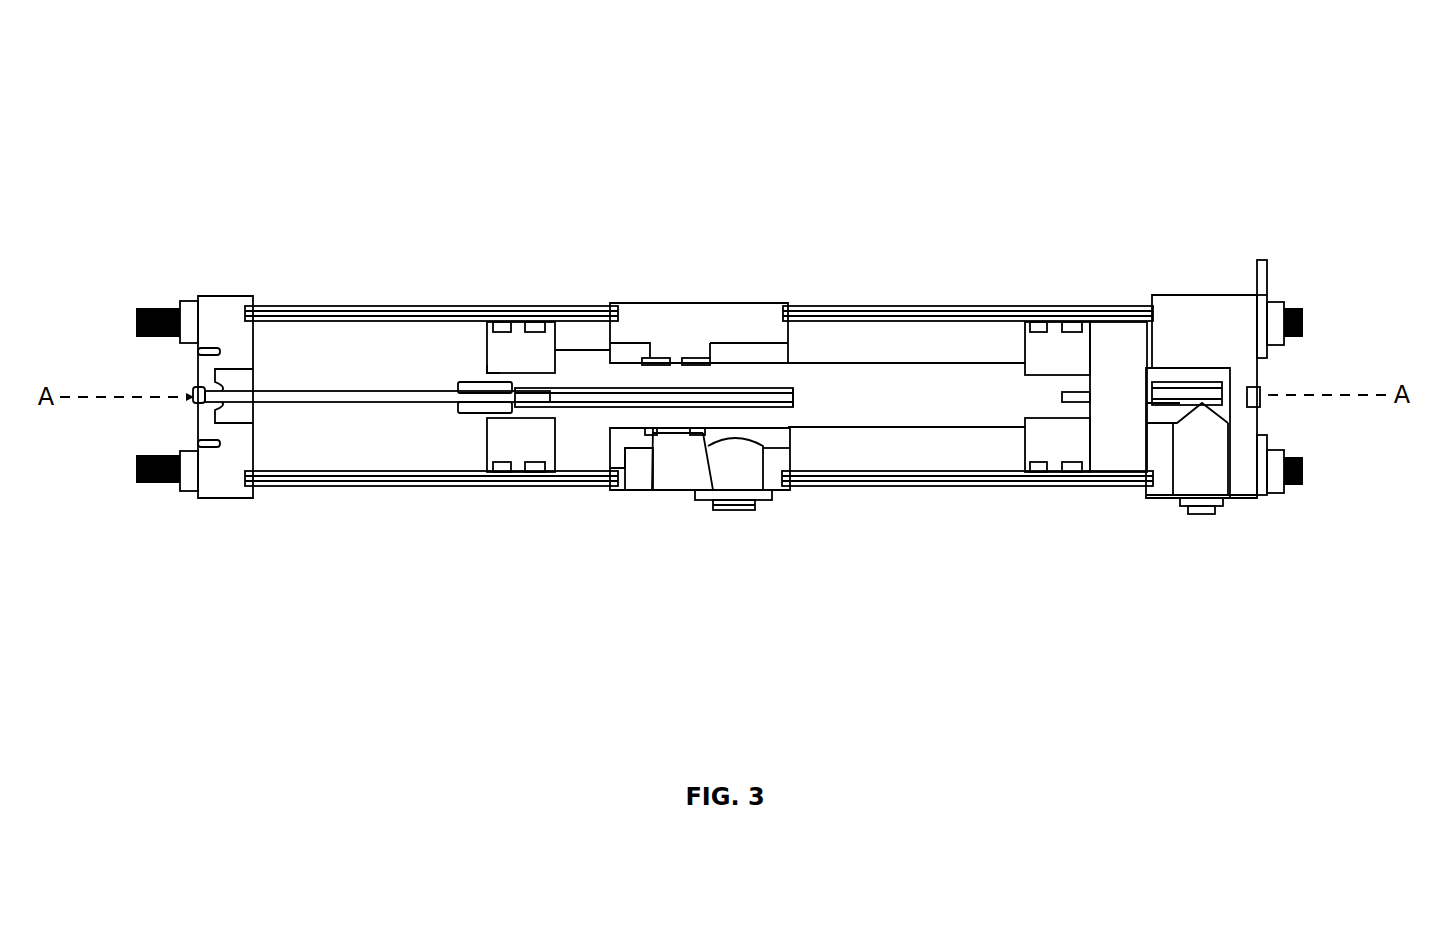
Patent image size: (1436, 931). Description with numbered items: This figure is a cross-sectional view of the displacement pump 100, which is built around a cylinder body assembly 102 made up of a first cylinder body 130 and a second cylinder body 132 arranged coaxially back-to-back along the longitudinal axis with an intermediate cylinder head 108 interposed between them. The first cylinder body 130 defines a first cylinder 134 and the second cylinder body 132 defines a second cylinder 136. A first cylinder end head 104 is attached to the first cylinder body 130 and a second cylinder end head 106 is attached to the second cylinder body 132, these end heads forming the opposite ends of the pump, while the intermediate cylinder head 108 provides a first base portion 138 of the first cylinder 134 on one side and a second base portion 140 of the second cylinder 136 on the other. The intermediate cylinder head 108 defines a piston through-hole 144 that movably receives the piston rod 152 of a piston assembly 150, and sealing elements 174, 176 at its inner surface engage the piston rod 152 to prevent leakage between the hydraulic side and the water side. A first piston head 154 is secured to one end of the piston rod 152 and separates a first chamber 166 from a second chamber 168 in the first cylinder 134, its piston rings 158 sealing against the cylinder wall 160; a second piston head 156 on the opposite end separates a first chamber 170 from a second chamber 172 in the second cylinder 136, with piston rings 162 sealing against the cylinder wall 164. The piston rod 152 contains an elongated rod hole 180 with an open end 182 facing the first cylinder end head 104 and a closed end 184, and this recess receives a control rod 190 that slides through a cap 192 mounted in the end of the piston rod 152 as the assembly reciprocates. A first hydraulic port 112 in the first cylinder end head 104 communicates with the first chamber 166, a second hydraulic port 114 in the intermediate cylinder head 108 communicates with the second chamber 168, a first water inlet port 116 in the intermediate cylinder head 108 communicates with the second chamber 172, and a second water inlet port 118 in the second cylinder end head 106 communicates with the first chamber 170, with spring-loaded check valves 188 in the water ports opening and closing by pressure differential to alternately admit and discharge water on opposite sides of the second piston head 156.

The displacement pump 100 is at (178, 112).
The cylinder body assembly 102 is at (373, 220).
The first cylinder end head 104 is at (236, 482).
The second cylinder end head 106 is at (1240, 470).
The intermediate cylinder head 108 is at (668, 318).
The first hydraulic port 112 is at (221, 320).
The second hydraulic port 114 is at (635, 470).
The first water inlet port 116 is at (744, 462).
The second water inlet port 118 is at (1203, 470).
The first cylinder body 130 is at (420, 316).
The second cylinder body 132 is at (936, 312).
The first cylinder 134 is at (392, 452).
The second cylinder 136 is at (935, 453).
The first base portion 138 is at (604, 455).
The second base portion 140 is at (800, 461).
The piston through-hole 144 is at (742, 345).
The piston assembly 150 is at (588, 348).
The piston rod 152 is at (829, 380).
The first piston head 154 is at (510, 353).
The second piston head 156 is at (1050, 343).
The piston rings 158 is at (540, 470).
The cylinder wall 160 is at (441, 462).
The piston rings 162 is at (1070, 470).
The cylinder wall 164 is at (860, 463).
The first chamber 166 is at (357, 428).
The second chamber 168 is at (580, 447).
The first chamber 170 is at (1130, 427).
The second chamber 172 is at (968, 445).
The sealing element 174 is at (650, 433).
The sealing element 176 is at (706, 443).
The rod hole 180 is at (725, 397).
The open end 182 is at (485, 375).
The closed end 184 is at (801, 393).
The check valves 188 is at (731, 488).
The control rod 190 is at (288, 395).
The cap 192 is at (463, 385).